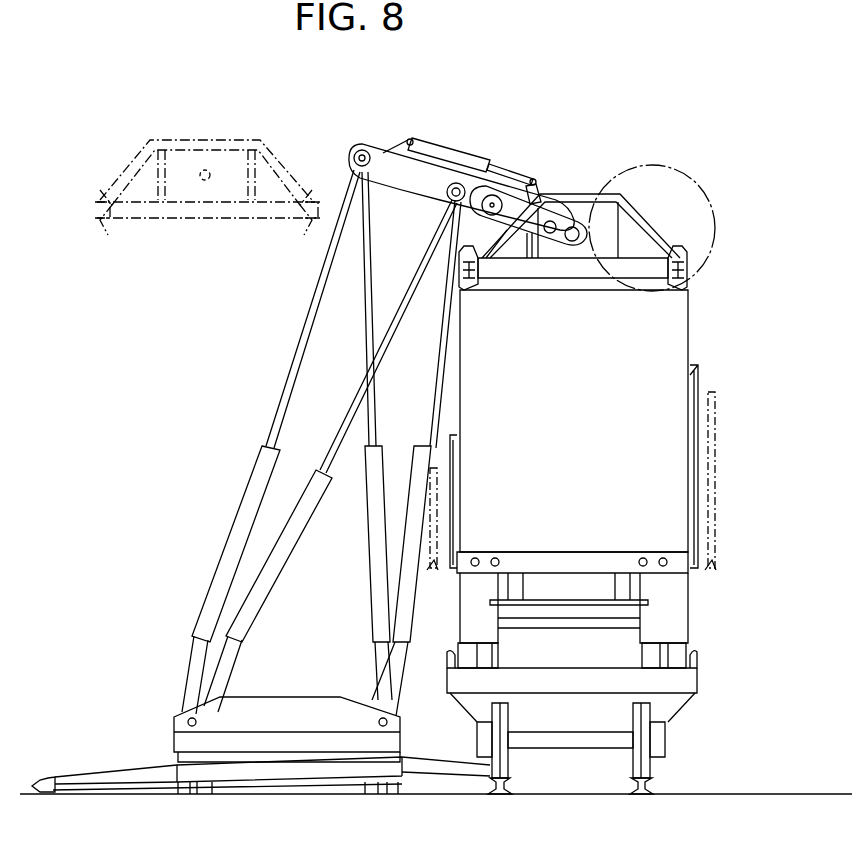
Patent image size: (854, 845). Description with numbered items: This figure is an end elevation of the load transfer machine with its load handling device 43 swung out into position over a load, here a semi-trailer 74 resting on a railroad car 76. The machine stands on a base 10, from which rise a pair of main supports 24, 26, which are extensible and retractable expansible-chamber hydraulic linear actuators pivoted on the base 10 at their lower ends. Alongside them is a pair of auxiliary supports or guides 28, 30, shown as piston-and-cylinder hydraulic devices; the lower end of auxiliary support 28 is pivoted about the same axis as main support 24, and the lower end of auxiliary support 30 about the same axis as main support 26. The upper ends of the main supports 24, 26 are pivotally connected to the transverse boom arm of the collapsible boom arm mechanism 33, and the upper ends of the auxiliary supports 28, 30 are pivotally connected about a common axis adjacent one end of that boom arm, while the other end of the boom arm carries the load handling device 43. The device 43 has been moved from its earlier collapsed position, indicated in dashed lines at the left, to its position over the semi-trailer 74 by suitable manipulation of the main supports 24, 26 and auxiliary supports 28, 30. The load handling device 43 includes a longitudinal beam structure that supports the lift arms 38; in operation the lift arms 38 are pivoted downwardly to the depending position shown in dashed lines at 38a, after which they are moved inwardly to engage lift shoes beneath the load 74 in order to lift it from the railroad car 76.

The base 10 is at (302, 730).
The main support 24 is at (404, 596).
The main support 26 is at (262, 595).
The auxiliary support 28 is at (372, 497).
The auxiliary support 30 is at (266, 487).
The collapsible boom arm mechanism 33 is at (382, 148).
The lift arm 38 is at (700, 378).
The depending position of lift arm 38a is at (716, 432).
The load handling device 43 is at (137, 165).
The semi-trailer 74 is at (660, 488).
The railroad car 76 is at (696, 672).